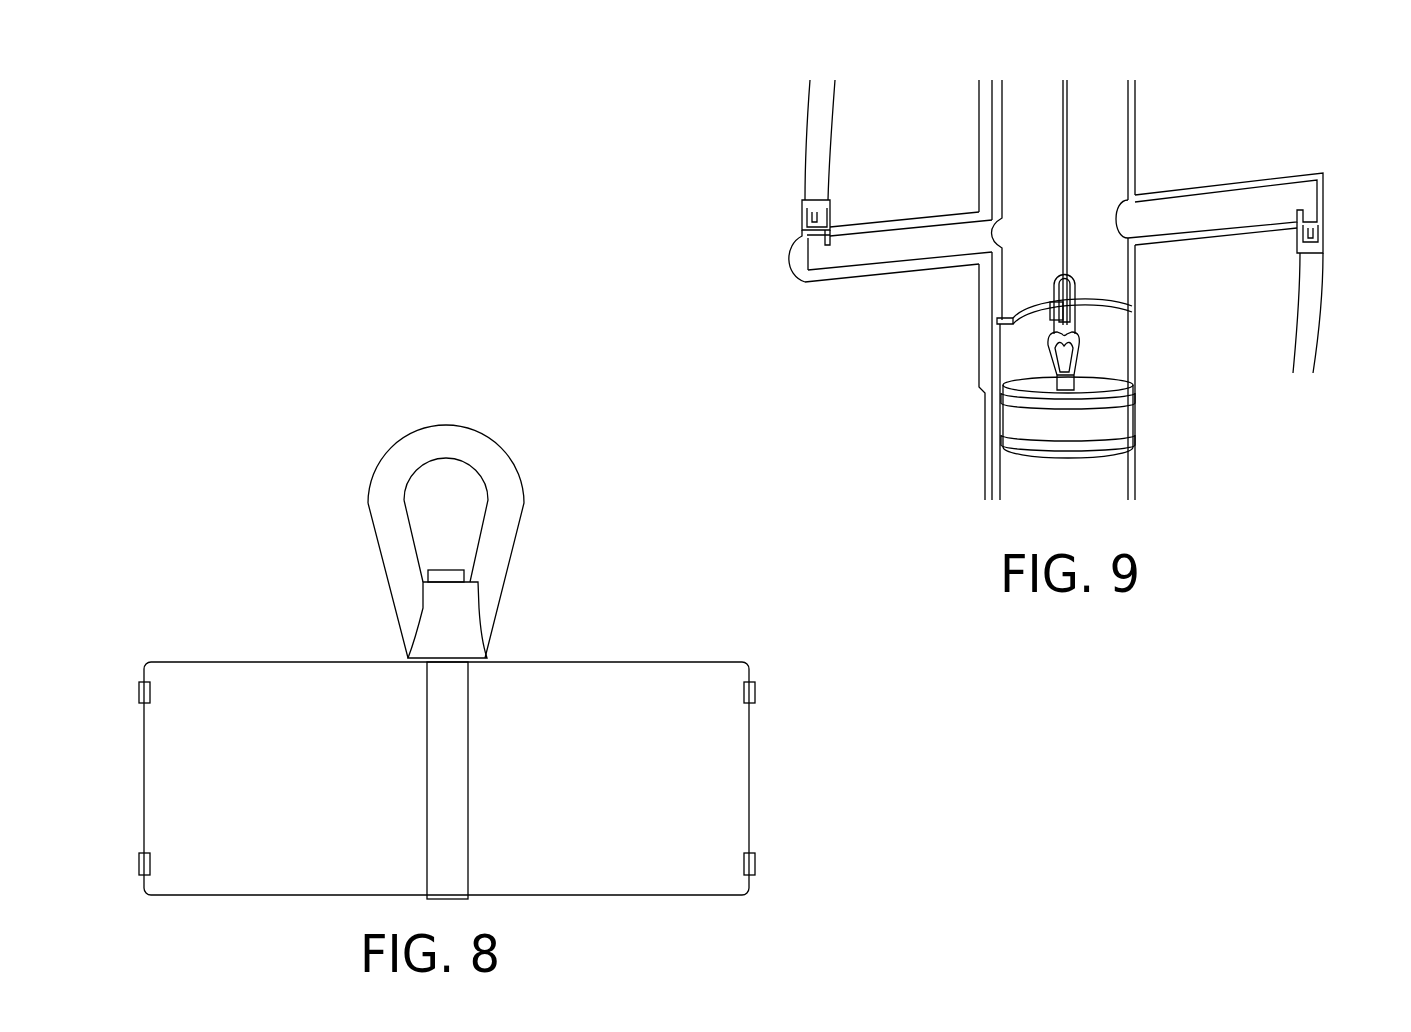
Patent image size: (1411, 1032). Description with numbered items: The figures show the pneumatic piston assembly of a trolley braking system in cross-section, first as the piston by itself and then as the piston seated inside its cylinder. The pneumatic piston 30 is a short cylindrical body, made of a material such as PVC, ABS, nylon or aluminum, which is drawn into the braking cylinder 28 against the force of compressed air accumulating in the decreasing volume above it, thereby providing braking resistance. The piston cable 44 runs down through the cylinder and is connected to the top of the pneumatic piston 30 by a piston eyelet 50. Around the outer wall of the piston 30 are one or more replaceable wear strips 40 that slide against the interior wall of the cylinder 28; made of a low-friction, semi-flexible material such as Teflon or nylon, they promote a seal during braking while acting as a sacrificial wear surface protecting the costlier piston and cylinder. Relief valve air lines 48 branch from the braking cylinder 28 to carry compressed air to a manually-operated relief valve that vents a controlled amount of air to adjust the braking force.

In FIG. 9, the braking cylinder 28 is at (992, 478).
In FIG. 8, the pneumatic piston 30 is at (290, 673).
In FIG. 9, the pneumatic piston 30 is at (1122, 423).
In FIG. 8, the replaceable wear strips 40 is at (755, 693).
In FIG. 9, the replaceable wear strips 40 is at (1013, 436).
In FIG. 9, the piston cable 44 is at (1067, 117).
In FIG. 9, the relief valve air line 48 is at (815, 160).
In FIG. 8, the piston eyelet 50 is at (378, 478).
In FIG. 9, the piston eyelet 50 is at (1083, 355).